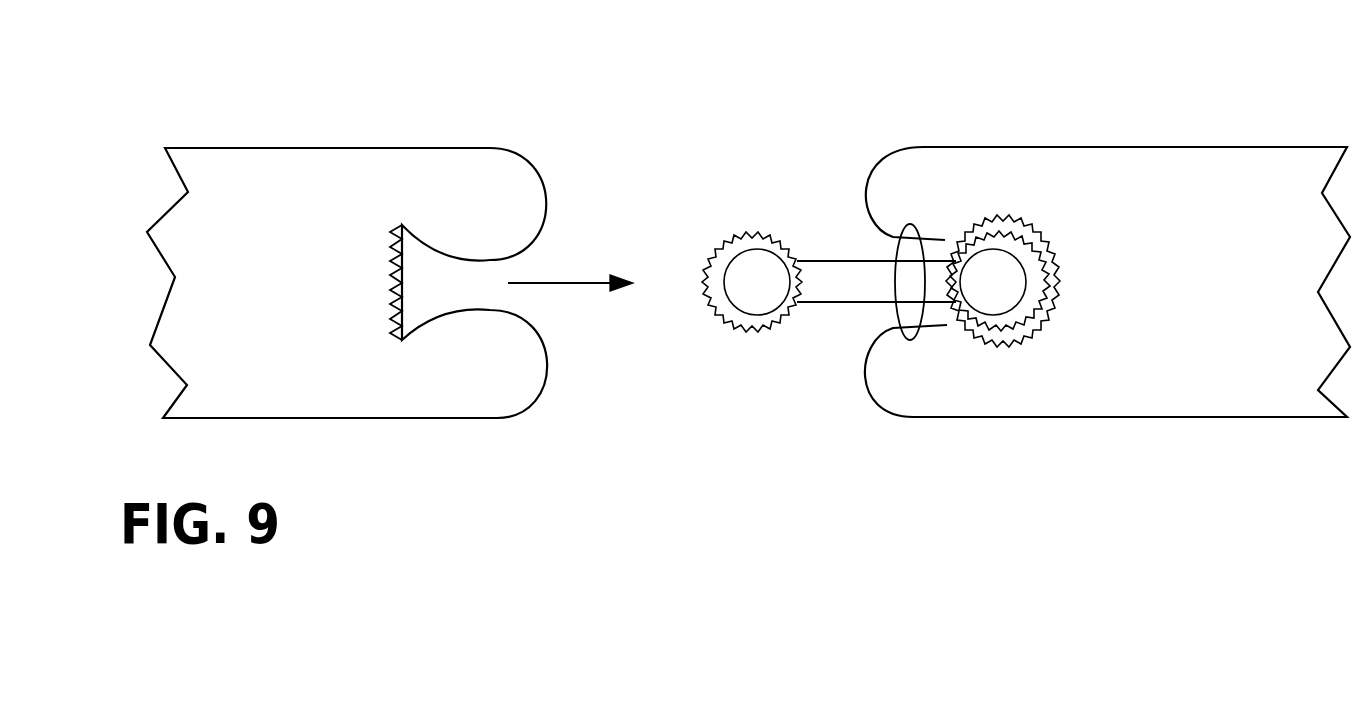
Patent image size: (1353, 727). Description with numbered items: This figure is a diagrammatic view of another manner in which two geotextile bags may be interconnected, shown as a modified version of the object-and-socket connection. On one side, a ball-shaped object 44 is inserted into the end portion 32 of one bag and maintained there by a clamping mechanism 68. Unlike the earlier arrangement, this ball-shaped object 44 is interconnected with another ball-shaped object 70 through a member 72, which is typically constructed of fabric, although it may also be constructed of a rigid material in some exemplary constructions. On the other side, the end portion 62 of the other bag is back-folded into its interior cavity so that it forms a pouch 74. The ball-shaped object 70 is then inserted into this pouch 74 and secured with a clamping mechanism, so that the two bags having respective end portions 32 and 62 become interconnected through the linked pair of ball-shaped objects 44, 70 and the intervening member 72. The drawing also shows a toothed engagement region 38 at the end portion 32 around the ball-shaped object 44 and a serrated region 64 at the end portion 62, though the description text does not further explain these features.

The end portion 32 is at (1147, 120).
The outer toothed gear 38 is at (1057, 262).
The ball-shaped object 44 is at (1000, 278).
The end portion 62 is at (353, 121).
The serrated teeth 64 is at (397, 256).
The clamping mechanism 68 is at (907, 225).
The ball-shaped object 70 is at (750, 283).
The member 72 is at (847, 287).
The pouch 74 is at (540, 308).